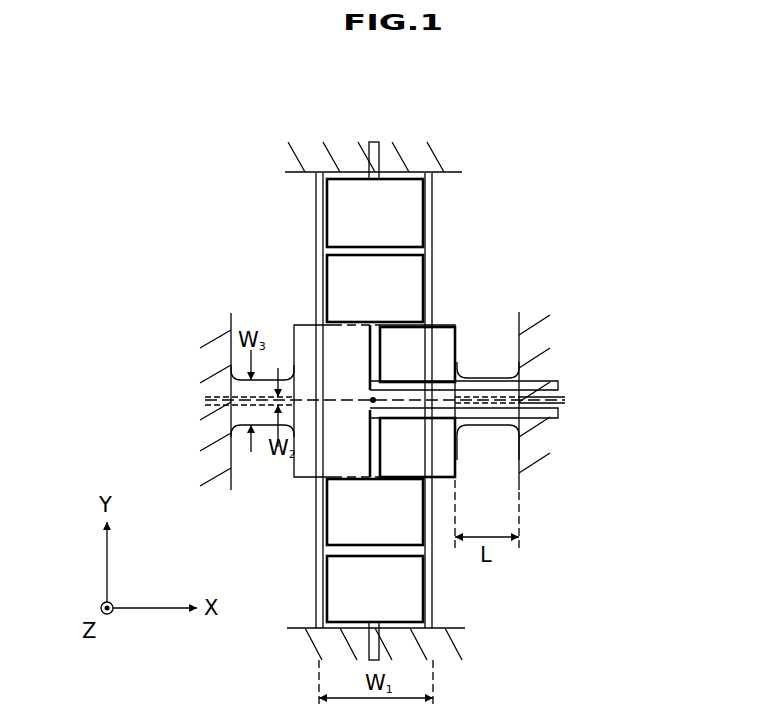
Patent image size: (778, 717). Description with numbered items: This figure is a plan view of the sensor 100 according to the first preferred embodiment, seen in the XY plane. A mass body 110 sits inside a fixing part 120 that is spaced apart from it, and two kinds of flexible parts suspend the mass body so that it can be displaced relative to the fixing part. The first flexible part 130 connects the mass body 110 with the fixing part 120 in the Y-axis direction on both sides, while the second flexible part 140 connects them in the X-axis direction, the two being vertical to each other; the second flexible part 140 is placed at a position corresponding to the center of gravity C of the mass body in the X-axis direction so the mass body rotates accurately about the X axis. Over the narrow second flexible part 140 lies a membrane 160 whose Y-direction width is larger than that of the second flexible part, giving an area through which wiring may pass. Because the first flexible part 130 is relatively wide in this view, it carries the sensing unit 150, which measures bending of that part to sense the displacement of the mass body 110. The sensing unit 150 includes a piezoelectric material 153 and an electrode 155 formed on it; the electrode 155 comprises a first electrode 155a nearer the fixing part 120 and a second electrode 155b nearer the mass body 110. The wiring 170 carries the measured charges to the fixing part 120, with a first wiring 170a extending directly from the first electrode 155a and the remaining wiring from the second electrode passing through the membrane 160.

The sensor 100 is at (168, 139).
The mass body 110 is at (307, 328).
The fixing part 120 is at (412, 160).
The first flexible part 130 is at (316, 243).
The second flexible part 140 is at (476, 400).
The sensing unit 150 is at (490, 400).
The piezoelectric material 153 is at (427, 300).
The electrode 155 is at (456, 400).
The first electrode 155a is at (410, 210).
The second electrode 155b is at (414, 278).
The membrane 160 is at (487, 427).
The wiring 170 is at (541, 360).
The first wiring 170a is at (373, 146).